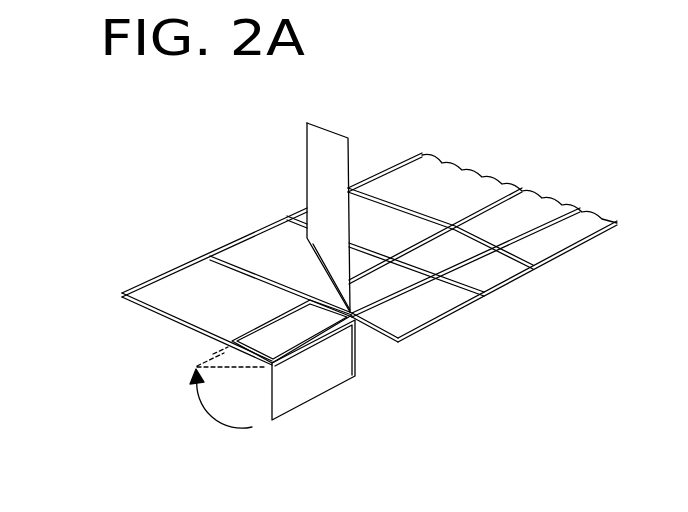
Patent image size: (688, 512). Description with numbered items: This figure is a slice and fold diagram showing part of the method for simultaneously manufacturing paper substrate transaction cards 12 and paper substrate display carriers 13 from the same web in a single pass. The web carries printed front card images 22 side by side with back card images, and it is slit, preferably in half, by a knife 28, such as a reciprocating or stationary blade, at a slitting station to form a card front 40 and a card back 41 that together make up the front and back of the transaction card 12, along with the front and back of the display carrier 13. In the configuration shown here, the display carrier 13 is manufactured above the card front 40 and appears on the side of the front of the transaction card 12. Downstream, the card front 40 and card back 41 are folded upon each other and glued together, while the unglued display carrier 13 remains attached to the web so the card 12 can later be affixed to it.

The paper substrate transaction card 12 is at (565, 253).
The paper substrate display carrier 13 is at (167, 290).
The front card image 22 is at (520, 212).
The knife 28 is at (307, 149).
The card front 40 is at (265, 326).
The card back 41 is at (315, 362).